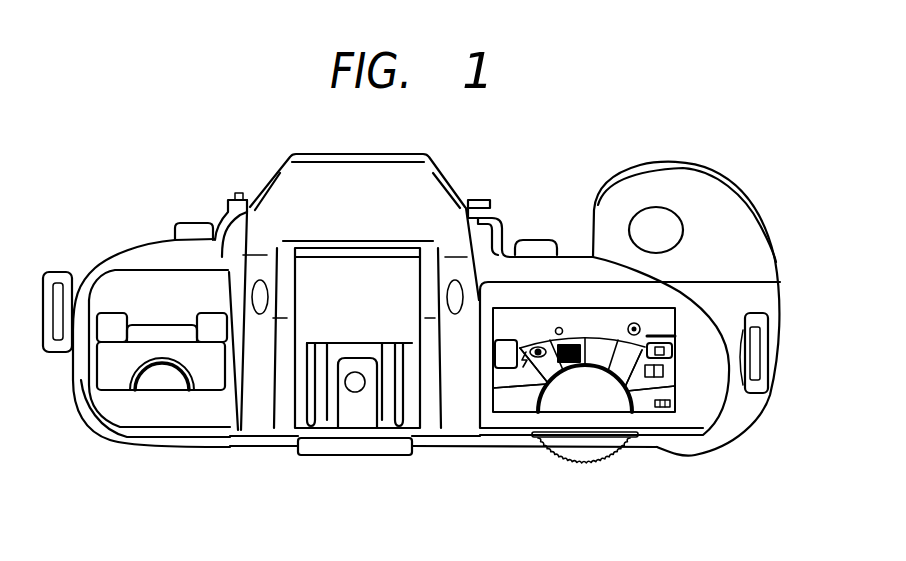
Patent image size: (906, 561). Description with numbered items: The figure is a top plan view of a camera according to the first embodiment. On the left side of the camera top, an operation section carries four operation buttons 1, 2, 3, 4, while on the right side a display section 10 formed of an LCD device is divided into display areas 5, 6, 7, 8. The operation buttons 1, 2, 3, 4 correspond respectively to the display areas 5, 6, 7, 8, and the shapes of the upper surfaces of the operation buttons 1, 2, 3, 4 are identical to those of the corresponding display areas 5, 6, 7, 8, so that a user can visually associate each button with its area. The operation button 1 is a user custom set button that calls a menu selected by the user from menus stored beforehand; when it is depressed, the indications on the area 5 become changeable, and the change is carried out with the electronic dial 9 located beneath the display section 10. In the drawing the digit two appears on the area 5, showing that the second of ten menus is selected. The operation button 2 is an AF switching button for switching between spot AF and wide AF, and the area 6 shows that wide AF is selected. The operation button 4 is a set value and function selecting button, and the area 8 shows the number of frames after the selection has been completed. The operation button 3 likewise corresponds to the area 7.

The operation button 1 is at (107, 313).
The operation button 2 is at (200, 313).
The operation button 3 is at (118, 372).
The operation button 4 is at (167, 382).
The display area 5 is at (495, 343).
The display area 6 is at (677, 352).
The display area 7 is at (523, 382).
The display area 8 is at (615, 399).
The electronic dial 9 is at (583, 452).
The display section 10 is at (573, 303).